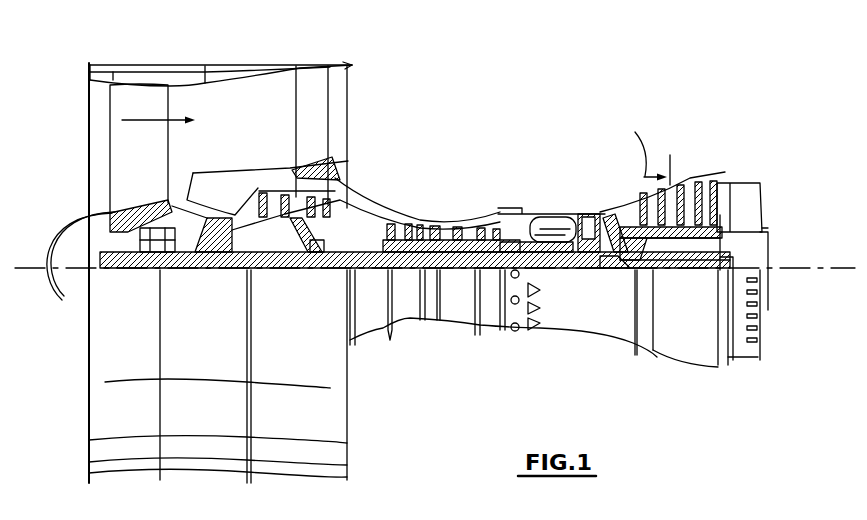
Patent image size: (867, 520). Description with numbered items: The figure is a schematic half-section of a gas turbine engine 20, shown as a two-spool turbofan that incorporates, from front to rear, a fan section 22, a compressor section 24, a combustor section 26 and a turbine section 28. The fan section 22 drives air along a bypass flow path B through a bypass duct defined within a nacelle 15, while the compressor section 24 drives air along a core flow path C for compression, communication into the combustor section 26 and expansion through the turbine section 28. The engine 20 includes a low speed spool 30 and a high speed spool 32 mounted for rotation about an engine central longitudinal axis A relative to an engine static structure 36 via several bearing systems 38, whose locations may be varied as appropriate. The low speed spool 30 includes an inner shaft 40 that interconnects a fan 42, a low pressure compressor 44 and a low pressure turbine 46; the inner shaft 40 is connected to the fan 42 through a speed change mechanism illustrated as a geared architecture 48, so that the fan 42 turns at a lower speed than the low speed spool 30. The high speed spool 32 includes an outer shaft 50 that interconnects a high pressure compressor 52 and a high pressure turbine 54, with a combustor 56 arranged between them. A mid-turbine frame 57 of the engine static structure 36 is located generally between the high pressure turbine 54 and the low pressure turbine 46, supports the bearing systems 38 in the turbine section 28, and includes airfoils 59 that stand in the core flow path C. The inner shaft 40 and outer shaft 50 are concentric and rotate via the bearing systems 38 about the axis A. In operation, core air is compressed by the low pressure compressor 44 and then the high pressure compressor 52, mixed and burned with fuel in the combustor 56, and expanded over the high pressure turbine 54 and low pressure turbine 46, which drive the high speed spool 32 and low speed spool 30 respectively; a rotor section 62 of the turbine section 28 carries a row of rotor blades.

The nacelle 15 is at (215, 63).
The gas turbine engine 20 is at (548, 101).
The fan section 22 is at (167, 56).
The compressor section 24 is at (388, 186).
The combustor section 26 is at (543, 185).
The turbine section 28 is at (662, 155).
The low speed spool 30 is at (461, 280).
The high speed spool 32 is at (492, 222).
The engine static structure 36 is at (488, 340).
The bearing systems 38 is at (320, 272).
The inner shaft 40 is at (360, 330).
The fan 42 is at (154, 155).
The low pressure compressor 44 is at (298, 197).
The low pressure turbine 46 is at (682, 180).
The geared architecture 48 is at (222, 270).
The outer shaft 50 is at (550, 268).
The high pressure compressor 52 is at (442, 224).
The high pressure turbine 54 is at (590, 215).
The combustor 56 is at (542, 228).
The mid-turbine frame 57 is at (620, 208).
The airfoils 59 is at (642, 252).
The rotor section 62 is at (702, 270).
The engine central longitudinal axis A is at (826, 268).
The bypass flow path B is at (147, 118).
The core flow path C is at (210, 191).